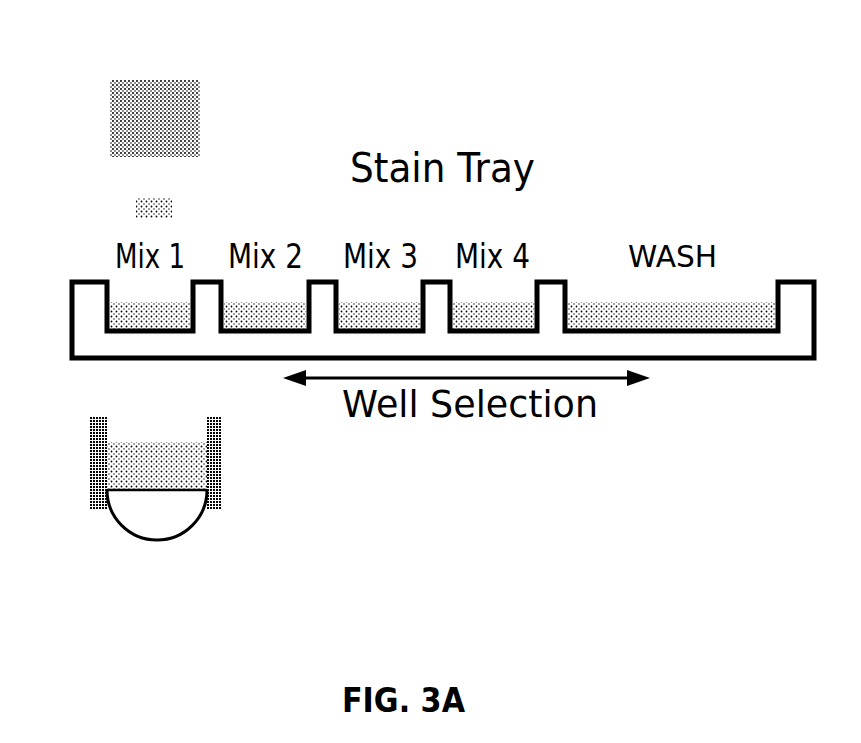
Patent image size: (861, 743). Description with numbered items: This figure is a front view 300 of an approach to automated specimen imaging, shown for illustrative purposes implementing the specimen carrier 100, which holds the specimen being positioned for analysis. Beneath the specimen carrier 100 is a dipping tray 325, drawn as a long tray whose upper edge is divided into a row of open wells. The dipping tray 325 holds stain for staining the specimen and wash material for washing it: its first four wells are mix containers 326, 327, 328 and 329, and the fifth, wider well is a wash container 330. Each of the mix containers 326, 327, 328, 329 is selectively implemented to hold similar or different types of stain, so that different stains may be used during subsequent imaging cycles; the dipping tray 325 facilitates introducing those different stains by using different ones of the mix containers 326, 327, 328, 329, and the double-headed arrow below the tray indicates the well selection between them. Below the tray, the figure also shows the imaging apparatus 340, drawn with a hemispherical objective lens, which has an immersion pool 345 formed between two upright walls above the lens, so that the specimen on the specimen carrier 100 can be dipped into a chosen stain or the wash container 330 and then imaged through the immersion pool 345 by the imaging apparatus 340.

The specimen carrier 100 is at (150, 68).
The front view 300 is at (452, 57).
The dipping tray 325 is at (700, 360).
The mix container 326 is at (150, 305).
The mix container 327 is at (290, 303).
The mix container 328 is at (392, 303).
The mix container 329 is at (490, 303).
The wash container 330 is at (730, 310).
The imaging apparatus 340 is at (157, 508).
The immersion pool 345 is at (118, 472).